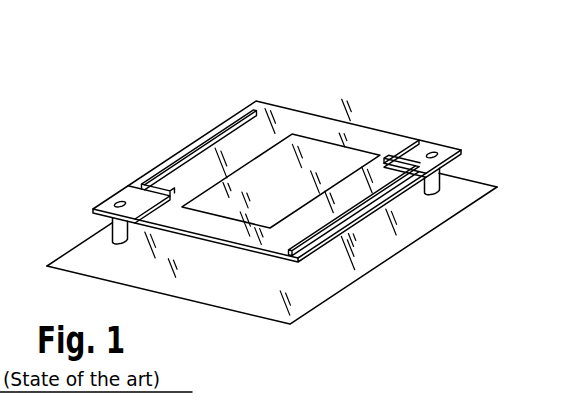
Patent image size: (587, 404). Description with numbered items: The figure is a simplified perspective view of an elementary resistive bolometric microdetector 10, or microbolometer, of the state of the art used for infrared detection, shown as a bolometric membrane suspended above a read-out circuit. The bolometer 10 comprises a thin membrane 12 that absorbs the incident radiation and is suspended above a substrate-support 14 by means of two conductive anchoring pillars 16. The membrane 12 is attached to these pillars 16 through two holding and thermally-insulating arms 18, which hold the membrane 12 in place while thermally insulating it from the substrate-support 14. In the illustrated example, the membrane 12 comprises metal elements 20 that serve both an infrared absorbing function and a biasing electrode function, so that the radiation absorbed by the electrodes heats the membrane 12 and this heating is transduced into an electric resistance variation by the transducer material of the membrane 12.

The elementary resistive bolometric microdetector 10 is at (268, 58).
The thin membrane 12 is at (388, 143).
The substrate-support 14 is at (325, 272).
The conductive anchoring pillar 16 is at (118, 239).
The holding and thermally-insulating arm 18 is at (161, 165).
The metal element 20 is at (320, 153).